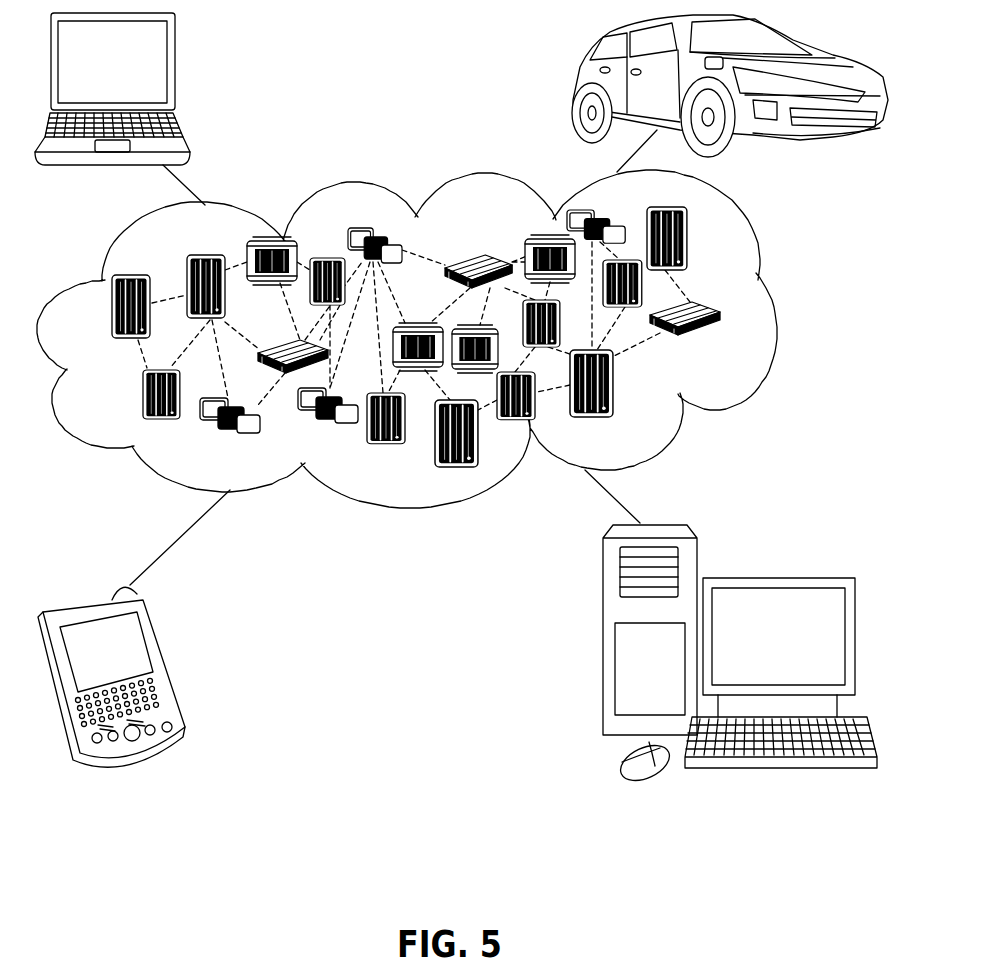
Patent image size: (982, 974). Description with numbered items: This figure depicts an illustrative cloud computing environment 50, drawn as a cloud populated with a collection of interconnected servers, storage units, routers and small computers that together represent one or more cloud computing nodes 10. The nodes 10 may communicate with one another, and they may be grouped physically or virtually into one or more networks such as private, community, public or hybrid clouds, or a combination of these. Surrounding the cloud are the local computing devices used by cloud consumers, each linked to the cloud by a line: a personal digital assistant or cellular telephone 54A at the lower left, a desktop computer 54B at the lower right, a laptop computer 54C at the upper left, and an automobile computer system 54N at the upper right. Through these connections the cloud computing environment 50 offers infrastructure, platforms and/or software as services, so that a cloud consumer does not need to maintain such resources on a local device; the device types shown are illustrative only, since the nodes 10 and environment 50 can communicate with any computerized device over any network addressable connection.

The cloud computing node 10 is at (724, 344).
The cloud computing environment 50 is at (773, 317).
The personal digital assistant or cellular telephone 54A is at (167, 663).
The desktop computer 54B is at (772, 577).
The laptop computer 54C is at (175, 70).
The automobile computer system 54N is at (575, 84).